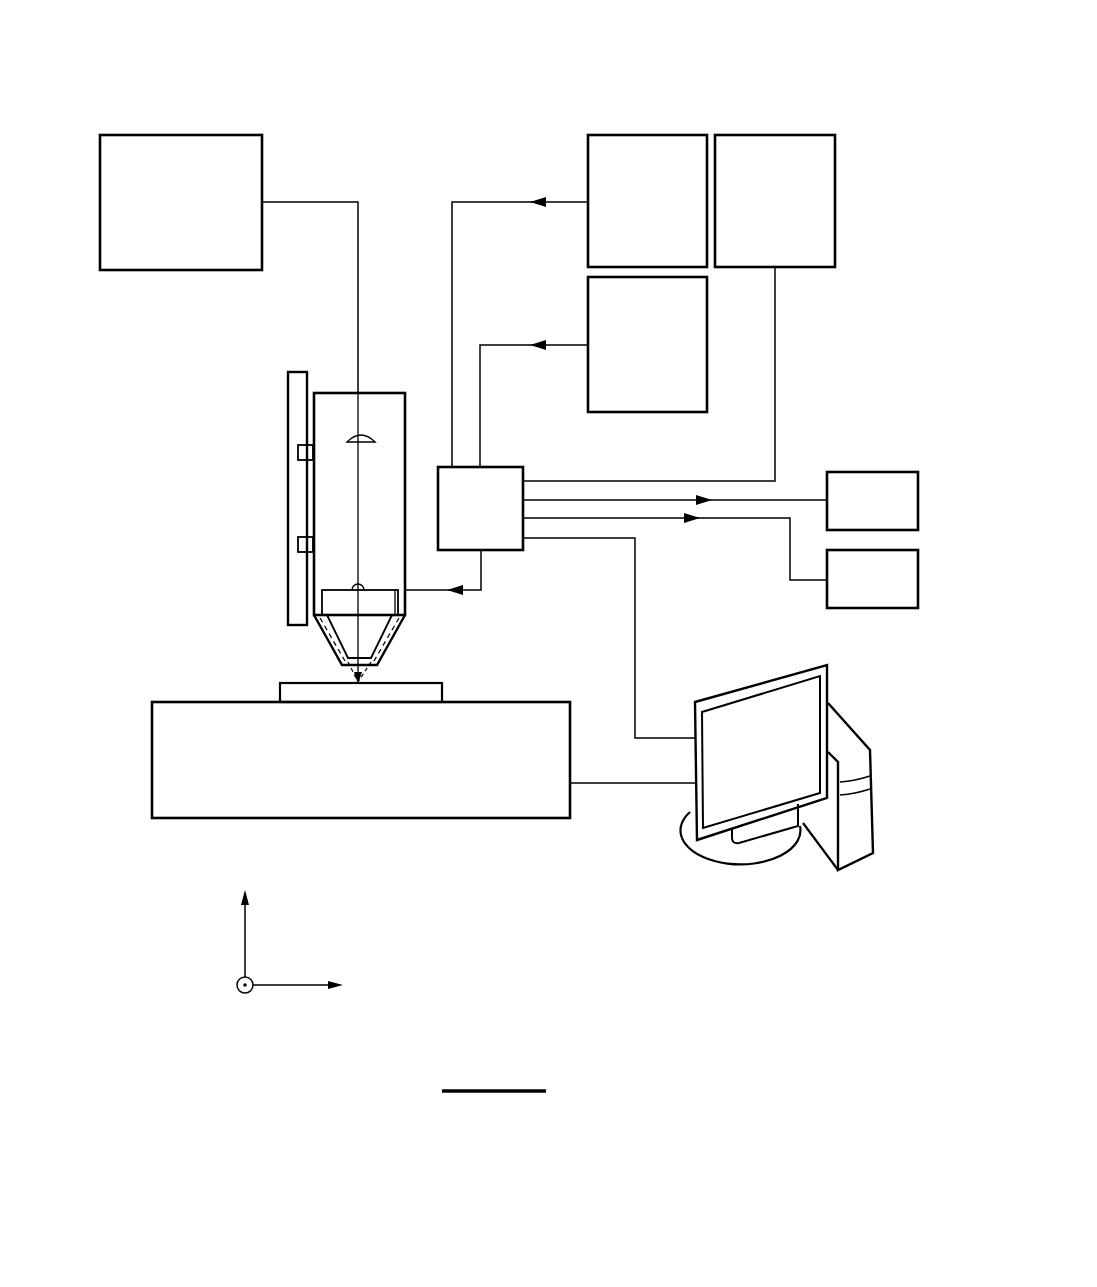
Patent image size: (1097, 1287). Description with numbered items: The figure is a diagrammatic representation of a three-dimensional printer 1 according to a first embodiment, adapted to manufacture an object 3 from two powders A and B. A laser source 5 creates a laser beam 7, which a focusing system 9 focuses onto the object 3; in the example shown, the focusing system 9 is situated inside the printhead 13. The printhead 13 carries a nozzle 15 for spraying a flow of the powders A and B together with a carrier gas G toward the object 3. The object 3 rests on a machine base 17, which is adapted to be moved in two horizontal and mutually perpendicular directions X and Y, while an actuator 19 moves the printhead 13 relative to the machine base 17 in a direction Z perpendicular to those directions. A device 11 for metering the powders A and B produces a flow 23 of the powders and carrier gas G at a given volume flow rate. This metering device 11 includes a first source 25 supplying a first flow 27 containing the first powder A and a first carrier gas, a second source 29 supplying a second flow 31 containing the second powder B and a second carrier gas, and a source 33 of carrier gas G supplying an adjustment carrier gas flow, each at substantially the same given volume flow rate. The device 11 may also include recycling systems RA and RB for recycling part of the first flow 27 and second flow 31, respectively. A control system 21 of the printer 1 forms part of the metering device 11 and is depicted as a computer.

The 3D printer 1 is at (503, 586).
The object 3 is at (432, 693).
The laser source 5 is at (176, 272).
The laser beam 7 is at (358, 307).
The focusing system 9 is at (337, 442).
The device for metering the powders 11 is at (687, 372).
The printhead 13 is at (332, 525).
The nozzle 15 is at (393, 637).
The machine base 17 is at (423, 760).
The actuator 19 is at (298, 477).
The control system 21 is at (741, 831).
The flow of powders and carrier gas 23 is at (481, 590).
The first source 25 is at (588, 150).
The first flow 27 is at (452, 270).
The second source 29 is at (835, 200).
The second flow 31 is at (775, 367).
The source of carrier gas 33 is at (648, 412).